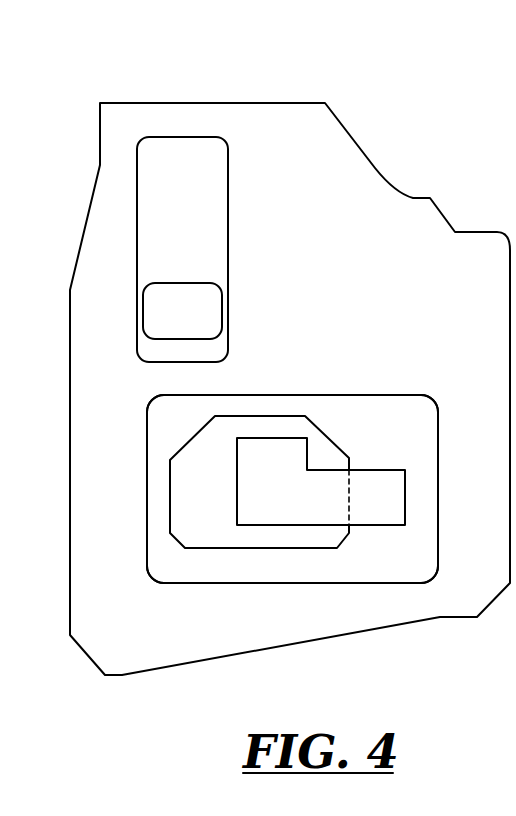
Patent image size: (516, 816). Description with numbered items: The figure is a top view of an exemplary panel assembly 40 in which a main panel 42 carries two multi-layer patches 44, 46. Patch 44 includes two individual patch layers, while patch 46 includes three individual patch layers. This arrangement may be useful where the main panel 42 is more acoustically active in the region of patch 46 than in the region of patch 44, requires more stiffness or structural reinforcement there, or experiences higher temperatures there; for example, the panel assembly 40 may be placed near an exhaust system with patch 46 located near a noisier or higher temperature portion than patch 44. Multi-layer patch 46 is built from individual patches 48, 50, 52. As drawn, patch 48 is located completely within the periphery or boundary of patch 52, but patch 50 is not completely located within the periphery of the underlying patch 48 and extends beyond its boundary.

The panel assembly 40 is at (290, 358).
The main panel 42 is at (403, 230).
The multi-layer patch 44 is at (228, 168).
The multi-layer patch 46 is at (330, 588).
The individual patch 48 is at (295, 428).
The individual patch 50 is at (370, 492).
The individual patch 52 is at (242, 402).